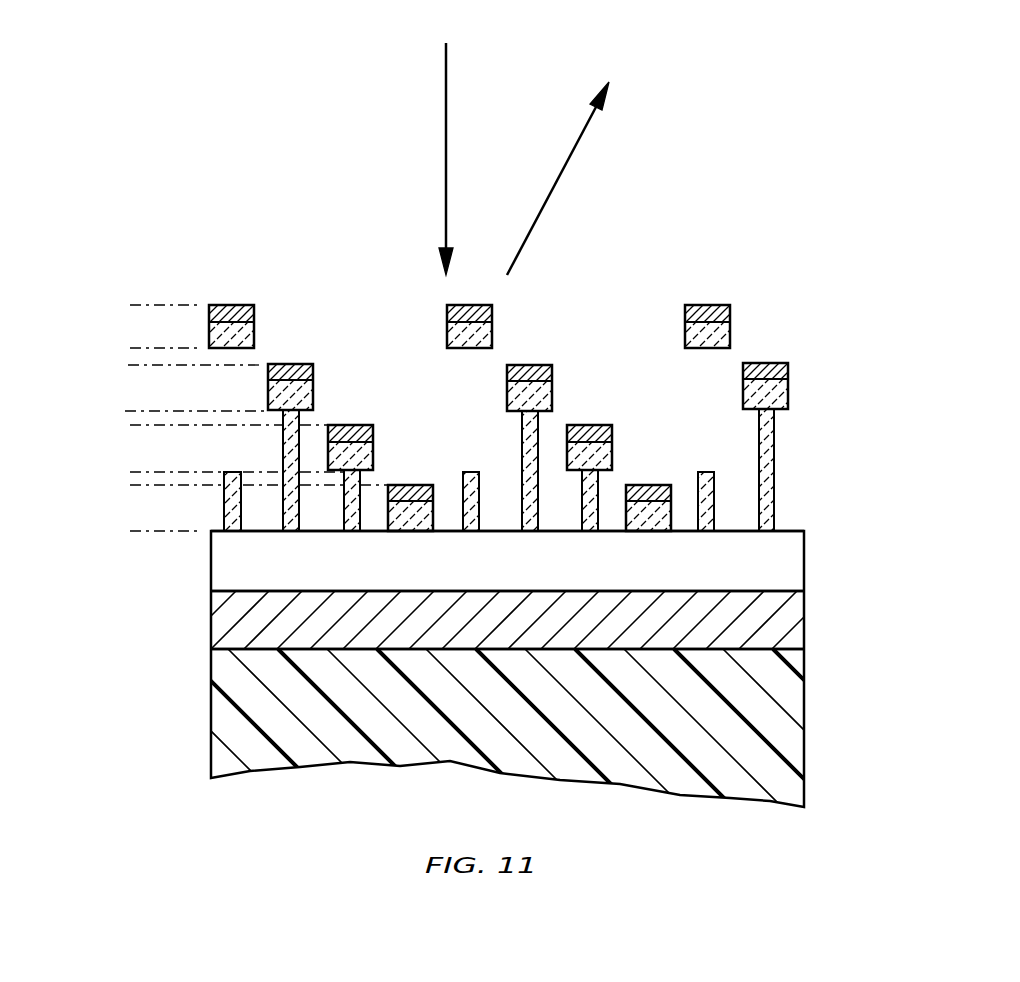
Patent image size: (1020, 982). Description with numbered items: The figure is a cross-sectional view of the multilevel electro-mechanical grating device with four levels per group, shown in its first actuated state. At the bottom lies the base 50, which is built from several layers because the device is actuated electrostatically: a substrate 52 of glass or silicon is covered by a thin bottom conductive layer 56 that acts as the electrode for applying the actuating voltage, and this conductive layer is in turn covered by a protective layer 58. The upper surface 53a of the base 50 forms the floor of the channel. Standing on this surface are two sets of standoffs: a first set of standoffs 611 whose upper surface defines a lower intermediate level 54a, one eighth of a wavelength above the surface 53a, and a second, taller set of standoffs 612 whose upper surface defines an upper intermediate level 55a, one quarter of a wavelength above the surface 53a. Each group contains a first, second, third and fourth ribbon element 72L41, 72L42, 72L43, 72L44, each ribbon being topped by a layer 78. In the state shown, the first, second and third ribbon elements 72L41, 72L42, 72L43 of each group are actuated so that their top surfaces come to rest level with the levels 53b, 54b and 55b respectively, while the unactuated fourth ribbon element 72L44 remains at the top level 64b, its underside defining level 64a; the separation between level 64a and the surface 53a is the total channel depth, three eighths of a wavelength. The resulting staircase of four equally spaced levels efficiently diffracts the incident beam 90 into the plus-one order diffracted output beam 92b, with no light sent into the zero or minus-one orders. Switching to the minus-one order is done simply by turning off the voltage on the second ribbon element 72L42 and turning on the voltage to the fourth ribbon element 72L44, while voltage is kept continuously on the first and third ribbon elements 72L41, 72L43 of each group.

The base 50 is at (182, 665).
The substrate 52 is at (805, 705).
The bottom conductive layer 56 is at (805, 618).
The protective layer 58 is at (805, 562).
The incident beam 90 is at (446, 160).
The +1 order diffracted output beam 92b is at (583, 132).
The cap layer on pillar 78 is at (228, 305).
The fourth ribbon element 72L44 is at (483, 332).
The third ribbon element 72L43 is at (540, 392).
The second ribbon element 72L42 is at (603, 452).
The first ribbon element 72L41 is at (665, 508).
The second set of standoffs 612 is at (775, 425).
The first set of standoffs 611 is at (710, 510).
The level 64b is at (128, 305).
The level 64a is at (128, 348).
The level 55b is at (128, 365).
The upper intermediate level 55a is at (125, 411).
The level 54b is at (130, 425).
The lower intermediate level 54a is at (128, 472).
The level 53b is at (128, 485).
The surface of the base 53a is at (128, 531).